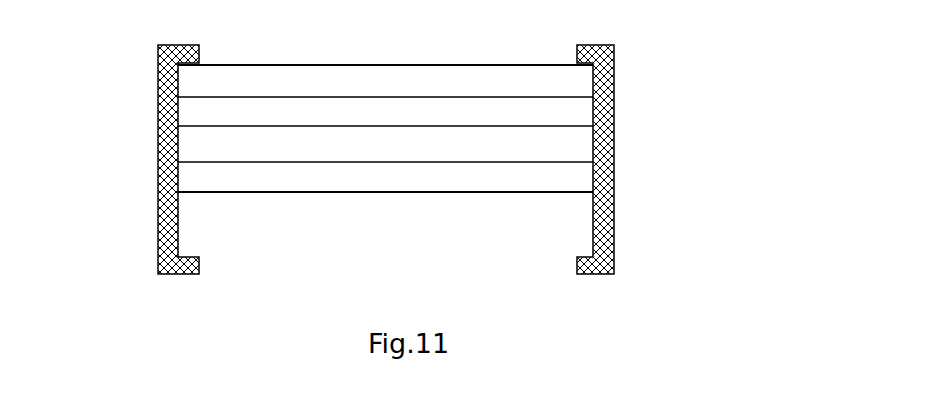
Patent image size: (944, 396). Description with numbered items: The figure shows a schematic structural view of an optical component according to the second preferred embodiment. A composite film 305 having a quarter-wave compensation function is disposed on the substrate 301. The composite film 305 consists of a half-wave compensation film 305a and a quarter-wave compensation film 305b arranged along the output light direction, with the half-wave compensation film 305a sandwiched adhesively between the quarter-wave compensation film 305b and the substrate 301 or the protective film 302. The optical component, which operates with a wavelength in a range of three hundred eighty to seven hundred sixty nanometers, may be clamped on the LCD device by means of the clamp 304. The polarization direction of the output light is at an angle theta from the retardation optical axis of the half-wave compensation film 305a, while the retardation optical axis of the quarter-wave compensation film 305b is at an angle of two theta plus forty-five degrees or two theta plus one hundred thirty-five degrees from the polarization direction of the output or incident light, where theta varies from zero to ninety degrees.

The substrate 301 is at (585, 175).
The protective film 302 is at (389, 73).
The clamp 304 is at (158, 93).
The composite film 305 is at (720, 75).
The λ/2 compensation film 305a is at (570, 110).
The λ/4 compensation film 305b is at (585, 149).